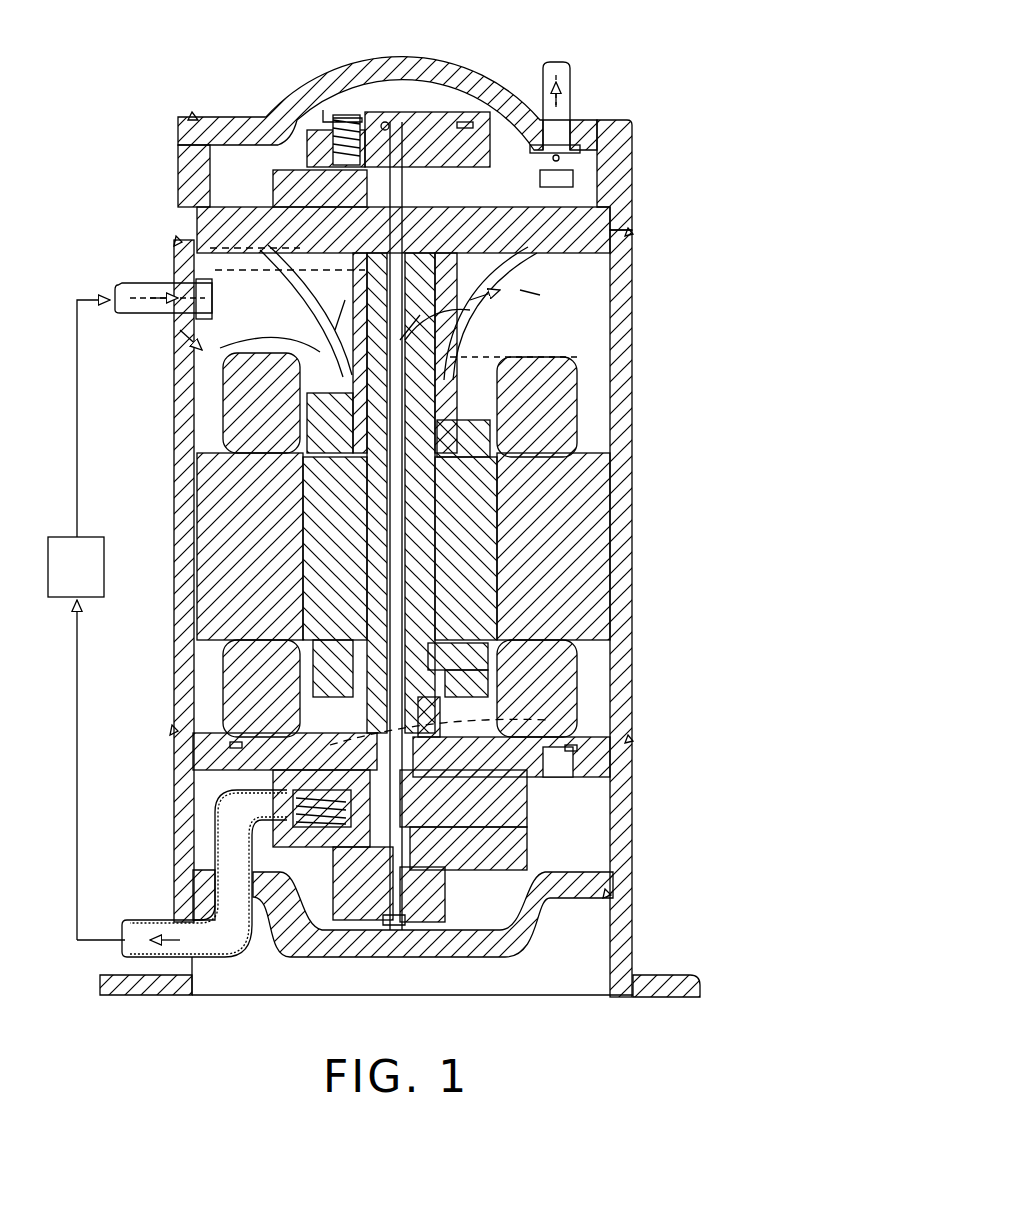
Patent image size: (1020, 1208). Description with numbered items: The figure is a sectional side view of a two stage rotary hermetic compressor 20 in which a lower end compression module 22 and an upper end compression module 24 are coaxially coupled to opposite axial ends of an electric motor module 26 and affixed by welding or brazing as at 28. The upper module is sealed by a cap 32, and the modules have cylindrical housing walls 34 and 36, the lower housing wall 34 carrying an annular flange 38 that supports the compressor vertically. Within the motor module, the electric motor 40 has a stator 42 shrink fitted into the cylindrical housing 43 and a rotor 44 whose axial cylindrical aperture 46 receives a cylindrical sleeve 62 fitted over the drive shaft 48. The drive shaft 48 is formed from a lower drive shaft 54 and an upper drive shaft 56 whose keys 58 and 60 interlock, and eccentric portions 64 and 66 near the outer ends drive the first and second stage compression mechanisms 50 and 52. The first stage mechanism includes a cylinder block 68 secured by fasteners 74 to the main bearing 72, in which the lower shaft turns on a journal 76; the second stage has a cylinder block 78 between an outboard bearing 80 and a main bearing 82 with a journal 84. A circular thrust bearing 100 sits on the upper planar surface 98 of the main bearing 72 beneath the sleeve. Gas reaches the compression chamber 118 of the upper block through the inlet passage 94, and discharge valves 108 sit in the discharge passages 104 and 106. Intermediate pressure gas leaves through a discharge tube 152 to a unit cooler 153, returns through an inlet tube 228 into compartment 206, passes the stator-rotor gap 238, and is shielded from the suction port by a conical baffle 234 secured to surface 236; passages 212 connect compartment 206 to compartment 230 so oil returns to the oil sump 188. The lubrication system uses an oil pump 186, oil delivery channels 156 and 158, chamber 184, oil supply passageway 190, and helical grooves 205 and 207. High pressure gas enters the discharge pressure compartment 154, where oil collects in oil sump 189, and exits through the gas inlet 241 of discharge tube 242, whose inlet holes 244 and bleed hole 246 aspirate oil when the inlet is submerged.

The compressor 20 is at (662, 66).
The lower end compression module 22 is at (640, 820).
The upper end compression module 24 is at (640, 206).
The electric motor module 26 is at (638, 462).
The weld 28 is at (195, 110).
The cap 32 is at (425, 62).
The lower housing wall 34 is at (626, 884).
The upper housing wall 36 is at (186, 153).
The annular flange 38 is at (655, 975).
The electric motor 40 is at (600, 420).
The stator 42 is at (597, 518).
The cylindrical housing 43 is at (622, 613).
The rotor 44 is at (340, 566).
The axial cylindrical aperture 46 is at (395, 496).
The drive shaft 48 is at (365, 440).
The first stage compression mechanism 50 is at (548, 793).
The second stage compression mechanism 52 is at (482, 118).
The lower drive shaft 54 is at (360, 668).
The upper drive shaft 56 is at (385, 385).
The key 58 is at (497, 497).
The key 60 is at (400, 478).
The cylindrical sleeve 62 is at (385, 615).
The eccentric portion 64 is at (352, 842).
The eccentric portion 66 is at (430, 298).
The cylinder block 68 is at (525, 800).
The main bearing 72 is at (300, 784).
The fasteners 74 is at (457, 118).
The journal 76 is at (435, 710).
The cylinder block 78 is at (280, 188).
The outboard bearing 80 is at (378, 98).
The main bearing 82 is at (620, 274).
The journal 84 is at (480, 318).
The inlet passage 94 is at (240, 250).
The upper planar surface 98 is at (345, 668).
The thrust bearing 100 is at (370, 652).
The discharge passage 104 is at (330, 815).
The discharge passage 106 is at (347, 98).
The discharge valve 108 is at (350, 160).
The compression chamber 118 is at (323, 150).
The discharge tube 152 is at (150, 927).
The unit cooler 153 is at (60, 537).
The discharge pressure compartment 154 is at (245, 158).
The oil delivery channel 156 is at (395, 596).
The oil delivery channel 158 is at (372, 347).
The chamber 184 is at (400, 125).
The oil pump 186 is at (432, 935).
The oil sump 188 is at (395, 925).
The oil sump 189 is at (570, 200).
The oil supply passageway 190 is at (395, 541).
The helical oil groove 205 is at (360, 272).
The compartment 206 is at (190, 332).
The helical groove 207 is at (490, 726).
The passages 212 is at (238, 750).
The inlet tube 228 is at (143, 290).
The compartment 230 is at (592, 846).
The baffle 234 is at (470, 332).
The surface 236 is at (600, 266).
The motor stator-rotor gap 238 is at (500, 445).
The gas inlet 241 is at (592, 178).
The discharge tube 242 is at (575, 92).
The inlet holes 244 is at (595, 150).
The bleed hole 246 is at (602, 165).